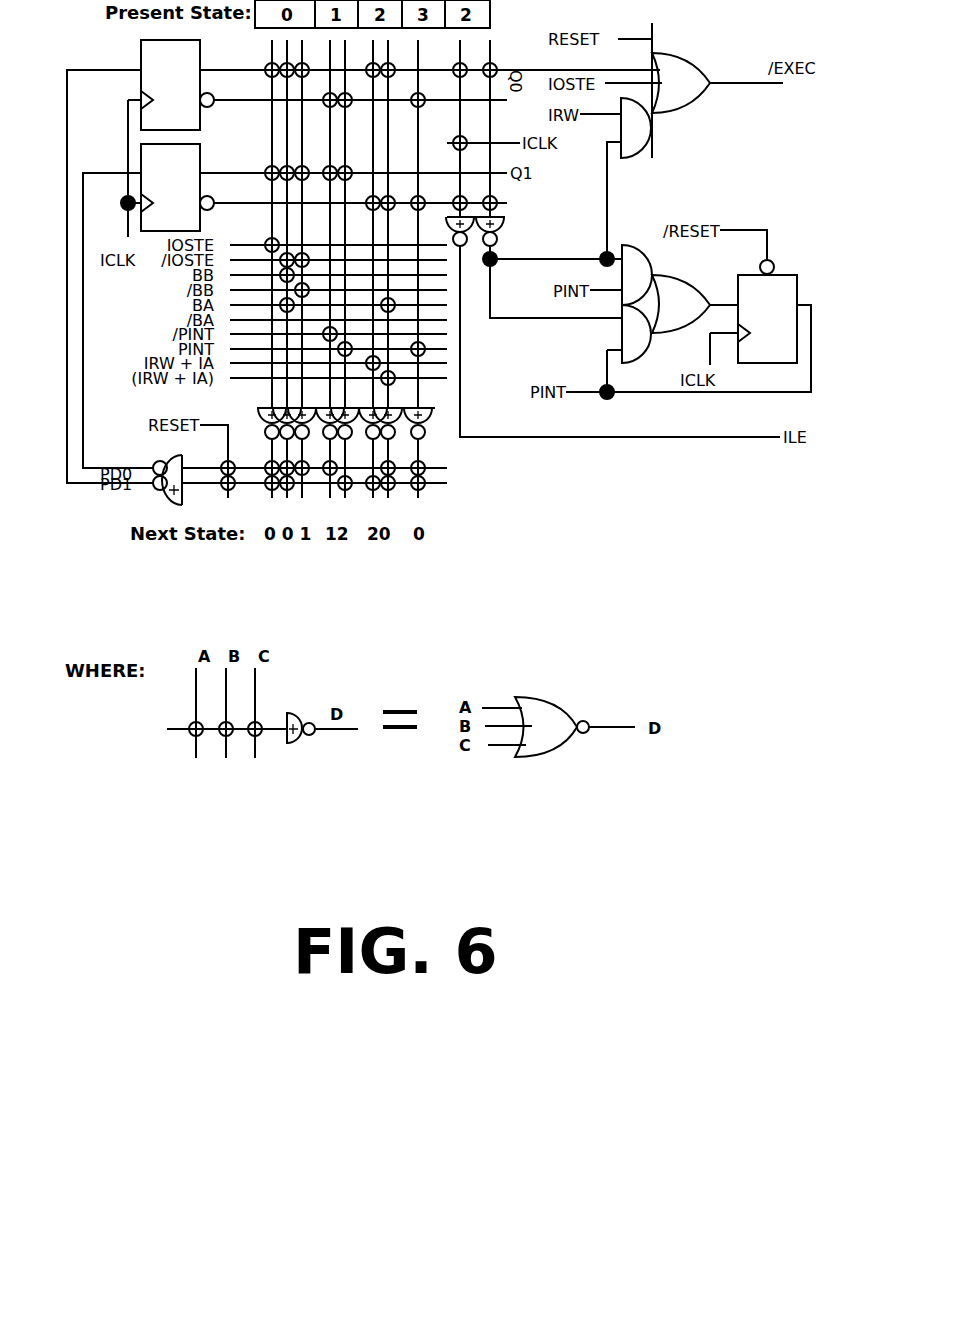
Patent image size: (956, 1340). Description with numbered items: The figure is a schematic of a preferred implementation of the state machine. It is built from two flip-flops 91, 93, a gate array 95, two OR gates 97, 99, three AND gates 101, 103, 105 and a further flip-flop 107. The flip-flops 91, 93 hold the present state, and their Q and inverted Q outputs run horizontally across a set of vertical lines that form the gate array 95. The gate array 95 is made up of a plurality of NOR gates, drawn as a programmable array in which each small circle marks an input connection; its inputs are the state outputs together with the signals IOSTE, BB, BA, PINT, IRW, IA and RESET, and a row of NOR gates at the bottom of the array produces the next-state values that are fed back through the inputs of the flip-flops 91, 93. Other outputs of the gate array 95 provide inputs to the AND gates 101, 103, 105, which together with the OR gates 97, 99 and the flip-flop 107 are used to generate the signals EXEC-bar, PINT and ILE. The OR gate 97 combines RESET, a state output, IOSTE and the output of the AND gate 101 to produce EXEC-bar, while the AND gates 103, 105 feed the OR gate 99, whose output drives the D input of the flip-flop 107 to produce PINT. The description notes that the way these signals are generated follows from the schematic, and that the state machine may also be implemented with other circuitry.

The flip-flop 91 is at (141, 60).
The flip-flop 93 is at (200, 163).
The gate array 95 is at (462, 476).
The OR gate 97 is at (678, 58).
The OR gate 99 is at (683, 292).
The AND gate 101 is at (648, 130).
The AND gate 103 is at (628, 247).
The AND gate 105 is at (625, 325).
The flip-flop 107 is at (810, 258).